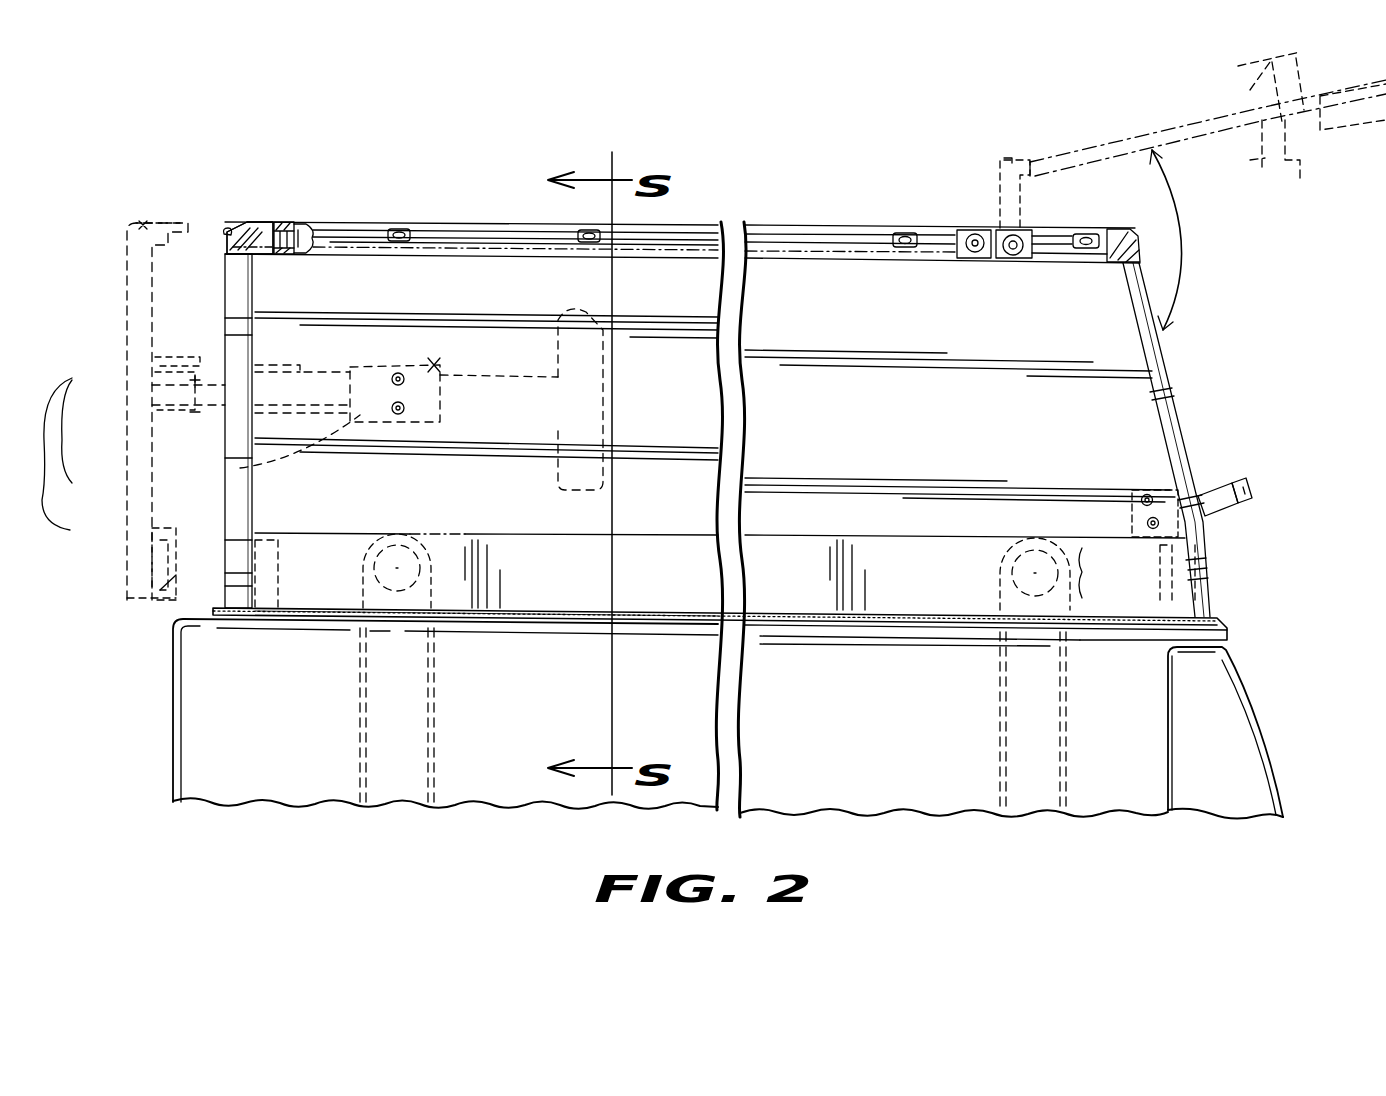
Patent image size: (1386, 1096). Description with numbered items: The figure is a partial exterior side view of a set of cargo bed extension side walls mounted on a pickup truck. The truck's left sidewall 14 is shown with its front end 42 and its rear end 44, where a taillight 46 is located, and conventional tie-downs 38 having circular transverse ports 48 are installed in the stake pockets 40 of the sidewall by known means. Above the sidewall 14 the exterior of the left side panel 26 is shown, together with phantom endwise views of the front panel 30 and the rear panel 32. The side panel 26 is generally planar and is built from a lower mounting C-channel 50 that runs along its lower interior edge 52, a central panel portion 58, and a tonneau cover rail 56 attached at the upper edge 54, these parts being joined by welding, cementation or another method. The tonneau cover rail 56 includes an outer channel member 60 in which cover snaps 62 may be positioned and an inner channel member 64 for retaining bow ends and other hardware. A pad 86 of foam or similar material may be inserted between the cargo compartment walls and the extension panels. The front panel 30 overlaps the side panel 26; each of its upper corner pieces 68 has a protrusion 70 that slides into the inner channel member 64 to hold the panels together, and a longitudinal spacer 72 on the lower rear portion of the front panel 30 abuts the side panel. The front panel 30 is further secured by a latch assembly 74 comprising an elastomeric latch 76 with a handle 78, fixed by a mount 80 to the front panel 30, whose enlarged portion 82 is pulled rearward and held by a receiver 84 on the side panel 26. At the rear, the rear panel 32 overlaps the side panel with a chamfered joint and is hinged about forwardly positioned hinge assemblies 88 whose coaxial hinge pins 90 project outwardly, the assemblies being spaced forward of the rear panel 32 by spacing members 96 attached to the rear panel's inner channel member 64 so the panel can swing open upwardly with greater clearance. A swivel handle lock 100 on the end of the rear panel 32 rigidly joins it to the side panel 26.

The left sidewall 14 is at (514, 735).
The left side panel 26 is at (430, 487).
The front panel 30 is at (127, 270).
The rear panel 32 is at (1100, 140).
The tie-downs 38 is at (372, 592).
The stake pockets 40 is at (432, 790).
The front end 42 is at (172, 750).
The rear end 44 is at (1225, 630).
The taillight 46 is at (1232, 722).
The circular transverse ports 48 is at (415, 545).
The mounting C-channel 50 is at (1082, 572).
The lower interior edge 52 is at (808, 535).
The upper edge 54 is at (430, 250).
The tonneau cover rail 56 is at (497, 226).
The central panel portion 58 is at (1160, 412).
The outer channel member 60 is at (520, 236).
The cover snaps 62 is at (230, 230).
The inner channel member 64 is at (312, 232).
The upper corner piece 68 is at (140, 226).
The protrusion 70 is at (180, 222).
The longitudinal spacer 72 is at (165, 582).
The latch assembly 74 is at (71, 461).
The elastomeric latch 76 is at (152, 390).
The handle 78 is at (572, 306).
The mount 80 is at (165, 420).
The enlarged portion 82 is at (432, 364).
The receiver 84 is at (240, 468).
The pad 86 is at (578, 604).
The hinge assemblies 88 is at (1038, 234).
The hinge pins 90 is at (985, 232).
The spacing members 96 is at (990, 205).
The swivel handle lock 100 is at (1300, 162).